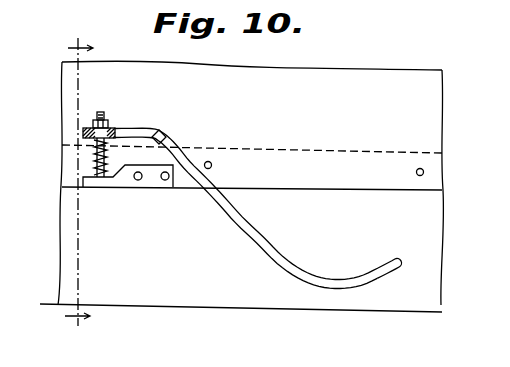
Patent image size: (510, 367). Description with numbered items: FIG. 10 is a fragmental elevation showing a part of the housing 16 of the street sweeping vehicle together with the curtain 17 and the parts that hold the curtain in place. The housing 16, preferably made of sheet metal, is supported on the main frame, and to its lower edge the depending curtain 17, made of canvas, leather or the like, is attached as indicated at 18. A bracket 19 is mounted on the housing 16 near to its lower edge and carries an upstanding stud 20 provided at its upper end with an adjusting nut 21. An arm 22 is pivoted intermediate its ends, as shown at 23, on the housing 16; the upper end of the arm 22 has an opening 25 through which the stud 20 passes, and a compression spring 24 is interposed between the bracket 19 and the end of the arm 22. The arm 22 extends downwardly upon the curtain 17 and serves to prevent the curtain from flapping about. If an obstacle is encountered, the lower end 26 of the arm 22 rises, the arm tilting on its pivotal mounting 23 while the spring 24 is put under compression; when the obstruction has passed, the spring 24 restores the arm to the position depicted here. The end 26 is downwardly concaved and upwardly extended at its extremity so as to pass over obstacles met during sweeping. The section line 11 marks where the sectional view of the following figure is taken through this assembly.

The section line 11- 11 is at (74, 182).
The housing 16 is at (362, 90).
The curtain 17 is at (273, 288).
The attachment of curtain 18 is at (417, 169).
The bracket 19 is at (157, 188).
The stud 20 is at (105, 113).
The adjusting nut 21 is at (110, 127).
The arm 22 is at (274, 255).
The pivotal mounting 23 is at (165, 136).
The compression spring 24 is at (97, 152).
The opening 25 is at (83, 130).
The lower end of arm 26 is at (348, 288).